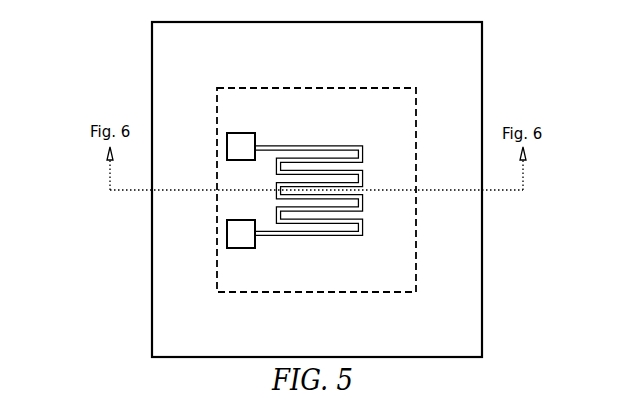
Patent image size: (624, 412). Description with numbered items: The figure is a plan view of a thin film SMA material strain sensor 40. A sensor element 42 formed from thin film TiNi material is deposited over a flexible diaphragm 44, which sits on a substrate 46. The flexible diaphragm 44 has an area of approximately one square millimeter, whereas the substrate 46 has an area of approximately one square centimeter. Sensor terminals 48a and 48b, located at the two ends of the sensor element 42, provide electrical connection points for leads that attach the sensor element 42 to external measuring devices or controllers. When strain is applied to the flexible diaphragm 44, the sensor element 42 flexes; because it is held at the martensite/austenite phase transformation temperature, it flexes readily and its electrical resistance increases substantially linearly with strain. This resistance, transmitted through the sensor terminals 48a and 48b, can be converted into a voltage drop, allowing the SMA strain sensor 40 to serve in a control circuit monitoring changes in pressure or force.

The SMA material strain sensor 40 is at (138, 357).
The sensor element 42 is at (356, 143).
The flexible diaphragm 44 is at (398, 232).
The substrate 46 is at (460, 323).
The sensor terminal 48a is at (245, 150).
The sensor terminal 48b is at (247, 232).